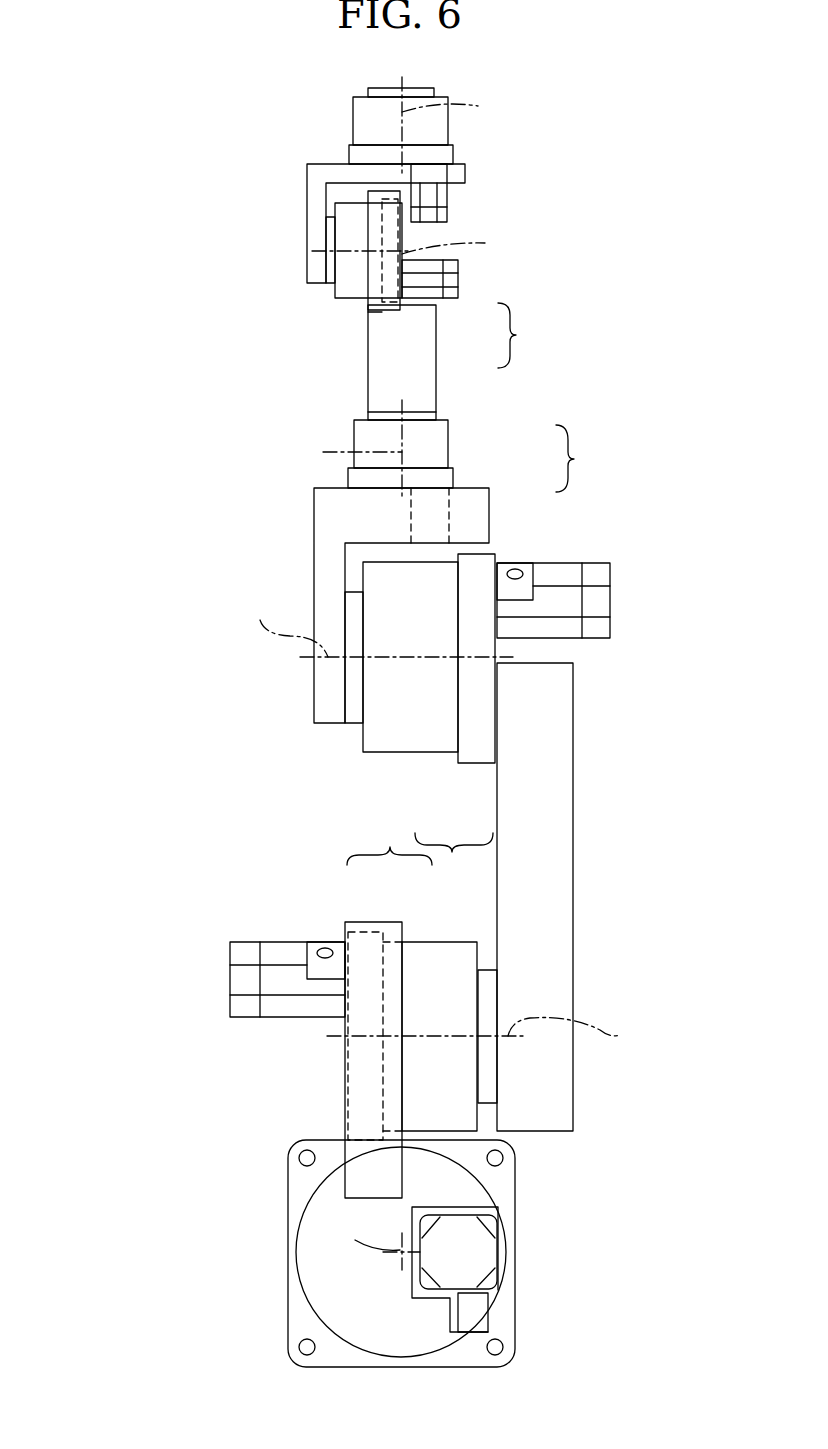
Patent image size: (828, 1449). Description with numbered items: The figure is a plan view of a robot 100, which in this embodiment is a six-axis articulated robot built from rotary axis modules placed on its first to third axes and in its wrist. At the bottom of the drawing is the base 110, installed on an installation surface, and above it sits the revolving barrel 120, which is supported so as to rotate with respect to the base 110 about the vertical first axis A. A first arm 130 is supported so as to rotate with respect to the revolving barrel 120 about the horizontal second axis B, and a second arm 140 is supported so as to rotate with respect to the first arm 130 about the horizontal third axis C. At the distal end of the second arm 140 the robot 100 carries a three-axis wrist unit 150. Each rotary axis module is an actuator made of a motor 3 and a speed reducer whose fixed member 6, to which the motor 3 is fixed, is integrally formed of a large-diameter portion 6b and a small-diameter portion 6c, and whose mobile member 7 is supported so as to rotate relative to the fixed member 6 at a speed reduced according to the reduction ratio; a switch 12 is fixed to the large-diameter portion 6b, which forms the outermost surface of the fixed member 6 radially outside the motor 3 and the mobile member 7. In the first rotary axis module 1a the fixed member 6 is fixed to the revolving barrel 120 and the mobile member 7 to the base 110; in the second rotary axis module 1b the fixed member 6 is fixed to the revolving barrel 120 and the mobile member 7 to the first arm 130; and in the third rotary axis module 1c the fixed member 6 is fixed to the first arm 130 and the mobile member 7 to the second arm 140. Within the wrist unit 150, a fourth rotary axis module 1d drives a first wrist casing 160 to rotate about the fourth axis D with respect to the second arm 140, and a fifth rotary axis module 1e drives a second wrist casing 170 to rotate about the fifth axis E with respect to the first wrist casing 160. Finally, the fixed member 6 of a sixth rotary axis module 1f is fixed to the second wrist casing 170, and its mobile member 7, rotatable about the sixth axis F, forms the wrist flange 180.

The robot 100 is at (133, 163).
The sixth rotary axis module 1f is at (461, 126).
The wrist flange 180 is at (333, 145).
The second wrist casing 170 is at (307, 193).
The wrist unit 150 is at (330, 250).
The first wrist casing 160 is at (436, 385).
The second arm 140 is at (310, 512).
The first arm 130 is at (575, 863).
The revolving barrel 120 is at (342, 1093).
The base 110 is at (288, 1258).
The first rotary axis module 1a is at (312, 1228).
The second rotary axis module 1b is at (412, 935).
The third rotary axis module 1c is at (447, 659).
The fourth rotary axis module 1d is at (317, 448).
The fifth rotary axis module 1e is at (348, 305).
The motor 3 is at (447, 212).
The fixed member 6 is at (453, 155).
The large-diameter portion 6b is at (382, 312).
The small-diameter portion 6c is at (368, 335).
The mobile member 7 is at (420, 90).
The switch 12 is at (515, 568).
The first axis A is at (380, 1247).
The second axis B is at (483, 1033).
The third axis C is at (382, 624).
The fourth axis D is at (353, 448).
The fifth axis E is at (408, 241).
The sixth axis F is at (449, 103).